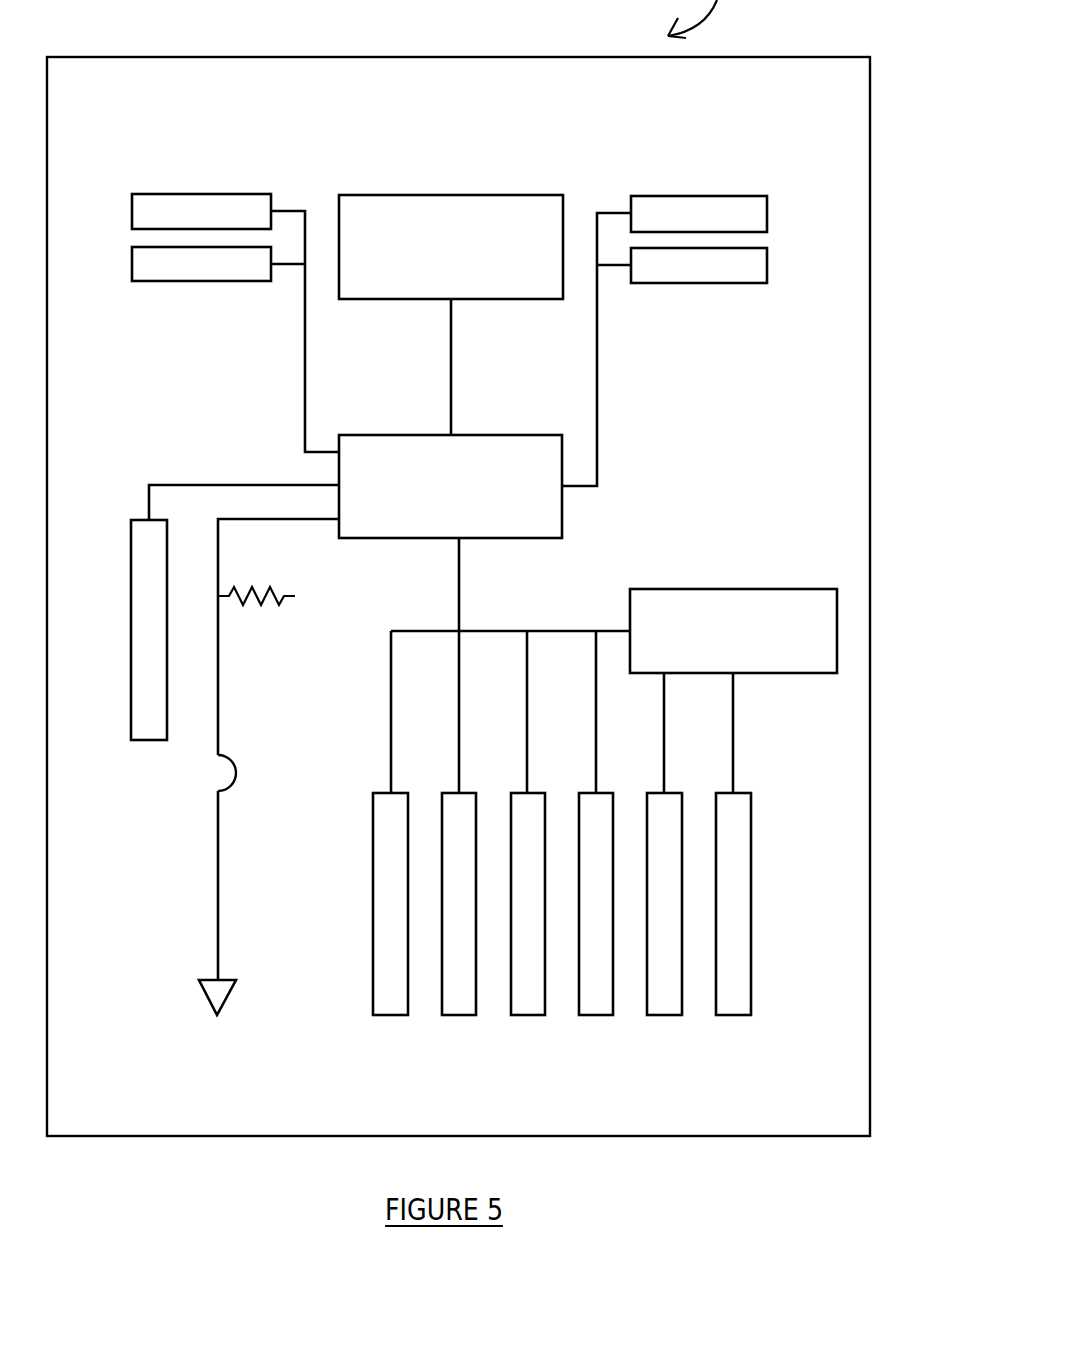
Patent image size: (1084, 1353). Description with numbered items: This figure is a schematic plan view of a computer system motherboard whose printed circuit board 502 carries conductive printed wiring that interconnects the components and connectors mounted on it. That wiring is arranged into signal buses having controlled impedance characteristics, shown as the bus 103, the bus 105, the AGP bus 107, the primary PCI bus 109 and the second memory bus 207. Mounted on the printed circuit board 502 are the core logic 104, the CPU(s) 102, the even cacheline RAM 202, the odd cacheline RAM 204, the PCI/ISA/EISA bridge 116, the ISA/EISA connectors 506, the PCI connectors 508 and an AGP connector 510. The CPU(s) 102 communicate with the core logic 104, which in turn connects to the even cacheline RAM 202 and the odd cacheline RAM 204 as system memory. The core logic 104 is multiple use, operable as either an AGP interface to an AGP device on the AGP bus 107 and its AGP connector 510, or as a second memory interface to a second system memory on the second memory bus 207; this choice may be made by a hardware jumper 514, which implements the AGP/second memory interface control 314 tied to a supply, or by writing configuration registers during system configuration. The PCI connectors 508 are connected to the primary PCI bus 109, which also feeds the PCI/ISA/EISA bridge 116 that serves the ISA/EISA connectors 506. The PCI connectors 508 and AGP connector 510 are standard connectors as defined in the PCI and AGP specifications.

The printed circuit board 502 is at (794, 1100).
The odd cacheline RAM 204 is at (134, 206).
The even cacheline RAM 202 is at (765, 209).
The central processing unit 102 is at (535, 203).
The second memory bus 207 is at (305, 352).
The bus 105 is at (598, 376).
The bus 103 is at (451, 352).
The core logic 104 is at (481, 441).
The AGP bus 107 is at (158, 478).
The AGP connector 510 is at (152, 733).
The AGP/second memory interface control 314 is at (220, 562).
The hardware jumper 514 is at (238, 762).
The primary PCI bus 109 is at (516, 629).
The PCI/ISA/EISA bridge 116 is at (753, 600).
The PCI connectors 508 is at (392, 1008).
The ISA/EISA connectors 506 is at (666, 1008).